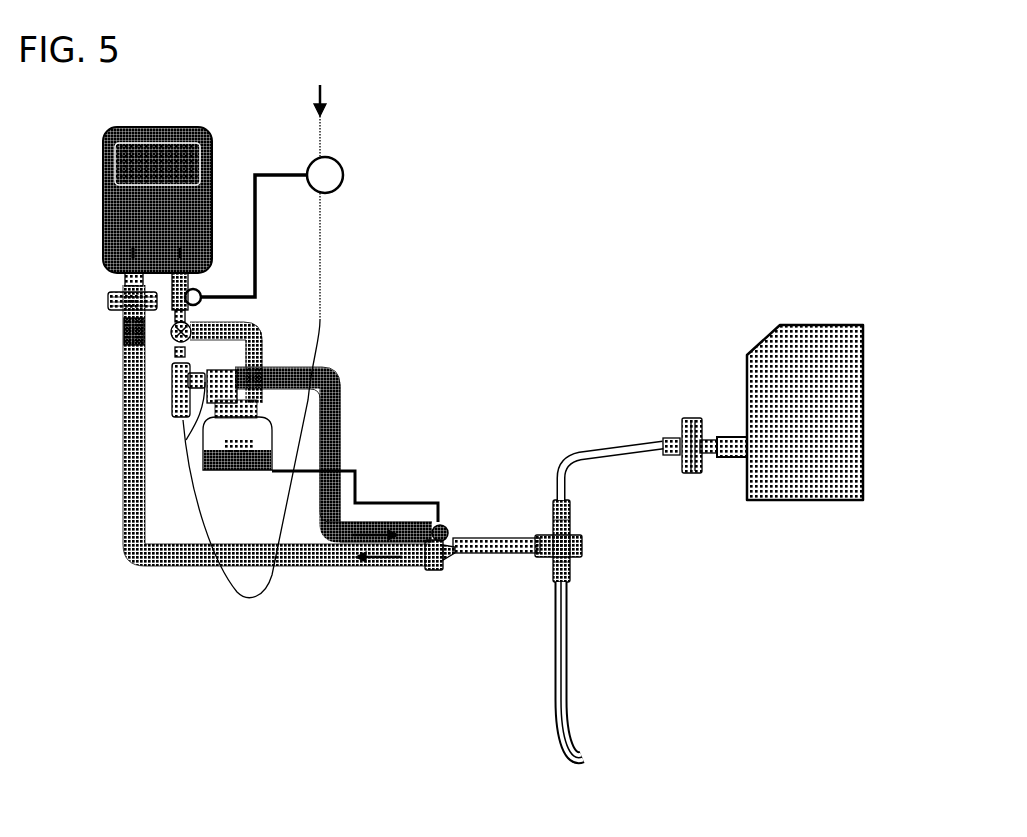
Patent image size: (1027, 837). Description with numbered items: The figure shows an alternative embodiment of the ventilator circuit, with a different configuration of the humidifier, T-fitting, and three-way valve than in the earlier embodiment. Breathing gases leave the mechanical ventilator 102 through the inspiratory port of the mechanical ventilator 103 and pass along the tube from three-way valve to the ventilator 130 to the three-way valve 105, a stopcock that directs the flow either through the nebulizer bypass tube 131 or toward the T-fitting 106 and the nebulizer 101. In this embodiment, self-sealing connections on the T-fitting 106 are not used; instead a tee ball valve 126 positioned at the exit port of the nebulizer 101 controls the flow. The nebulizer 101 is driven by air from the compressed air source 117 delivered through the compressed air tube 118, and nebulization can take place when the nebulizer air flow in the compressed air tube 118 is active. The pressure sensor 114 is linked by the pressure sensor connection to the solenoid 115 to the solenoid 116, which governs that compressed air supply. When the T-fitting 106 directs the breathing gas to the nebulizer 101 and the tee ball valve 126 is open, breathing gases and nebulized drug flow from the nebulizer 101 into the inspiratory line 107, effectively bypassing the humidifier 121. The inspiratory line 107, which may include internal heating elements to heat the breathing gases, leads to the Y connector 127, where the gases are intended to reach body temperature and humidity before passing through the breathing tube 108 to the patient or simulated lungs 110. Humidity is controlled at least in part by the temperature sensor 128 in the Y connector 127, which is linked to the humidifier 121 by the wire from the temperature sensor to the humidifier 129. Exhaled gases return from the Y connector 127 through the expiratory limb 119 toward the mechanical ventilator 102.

The nebulizer 101 is at (180, 390).
The mechanical ventilator 102 is at (105, 195).
The inspiratory port of the mechanical ventilator 103 is at (100, 220).
The three-way valve 105 is at (167, 332).
The T-fitting 106 is at (230, 355).
The inspiratory line 107 is at (342, 398).
The breathing tube 108 is at (597, 457).
The patient or simulated lungs 110 is at (760, 343).
The pressure sensor 114 is at (203, 292).
The pressure sensor connection to the solenoid 115 is at (277, 173).
The solenoid 116 is at (345, 175).
The compressed air source 117 is at (330, 187).
The compressed air tube 118 is at (223, 580).
The expiratory limb 119 is at (307, 567).
The humidifier 121 is at (210, 453).
The tee ball valve 126 is at (177, 438).
The Y connector 127 is at (438, 567).
The temperature sensor 128 is at (450, 532).
The wire from the temperature sensor to the humidifier 129 is at (387, 502).
The tube from three-way valve to the ventilator 130 is at (167, 292).
The nebulizer bypass tube 131 is at (262, 338).